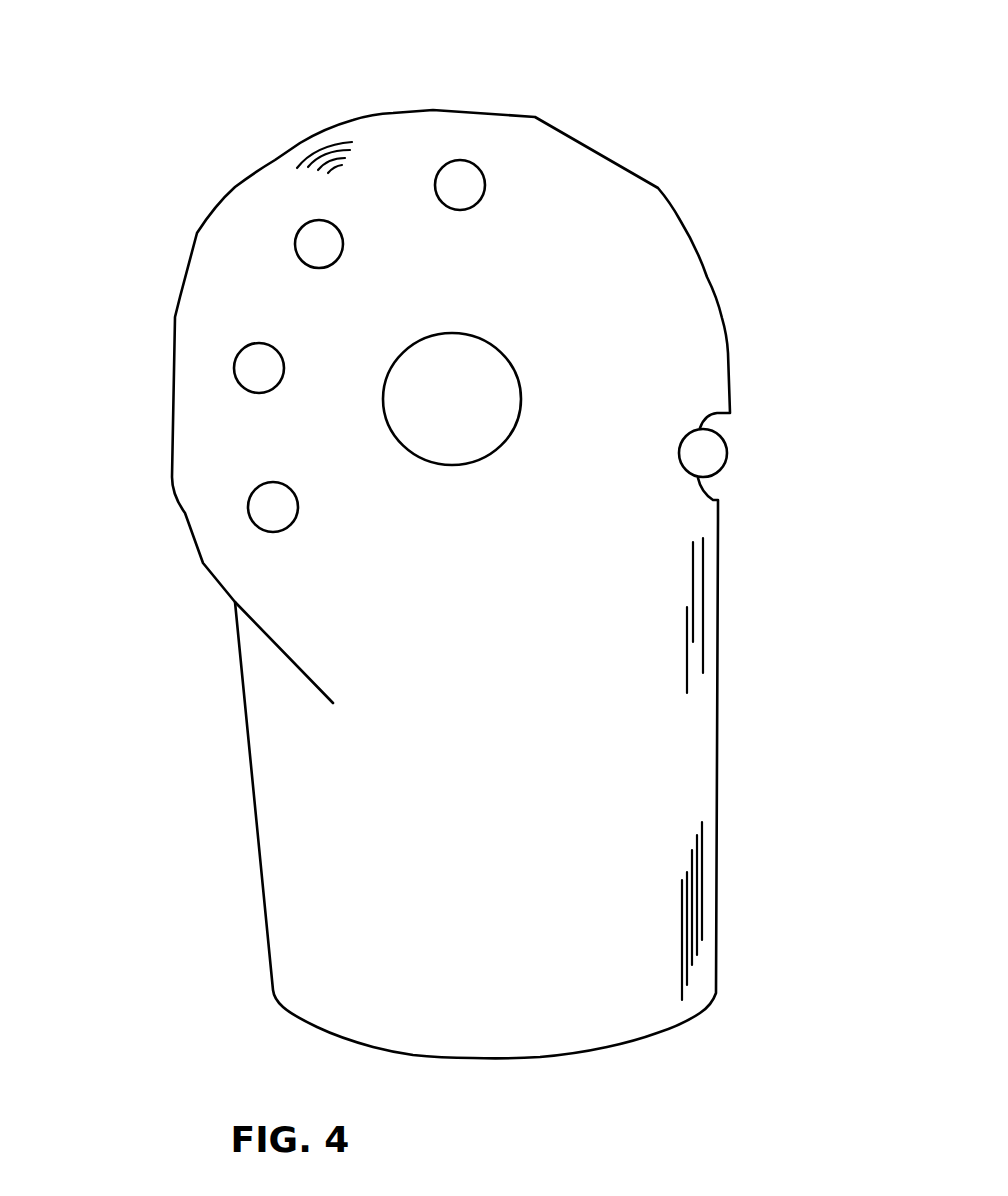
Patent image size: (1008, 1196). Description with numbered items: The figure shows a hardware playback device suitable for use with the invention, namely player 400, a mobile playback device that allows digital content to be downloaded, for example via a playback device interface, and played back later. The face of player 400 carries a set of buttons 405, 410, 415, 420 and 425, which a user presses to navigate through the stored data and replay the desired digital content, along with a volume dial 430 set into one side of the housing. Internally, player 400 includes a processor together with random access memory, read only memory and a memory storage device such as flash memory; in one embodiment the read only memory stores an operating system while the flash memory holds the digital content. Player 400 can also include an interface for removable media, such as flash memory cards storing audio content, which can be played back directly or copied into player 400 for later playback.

The player 400 is at (654, 1013).
The button 405 is at (164, 537).
The button 410 is at (164, 341).
The button 415 is at (237, 172).
The button 420 is at (532, 114).
The button 425 is at (633, 341).
The volume dial 430 is at (782, 427).